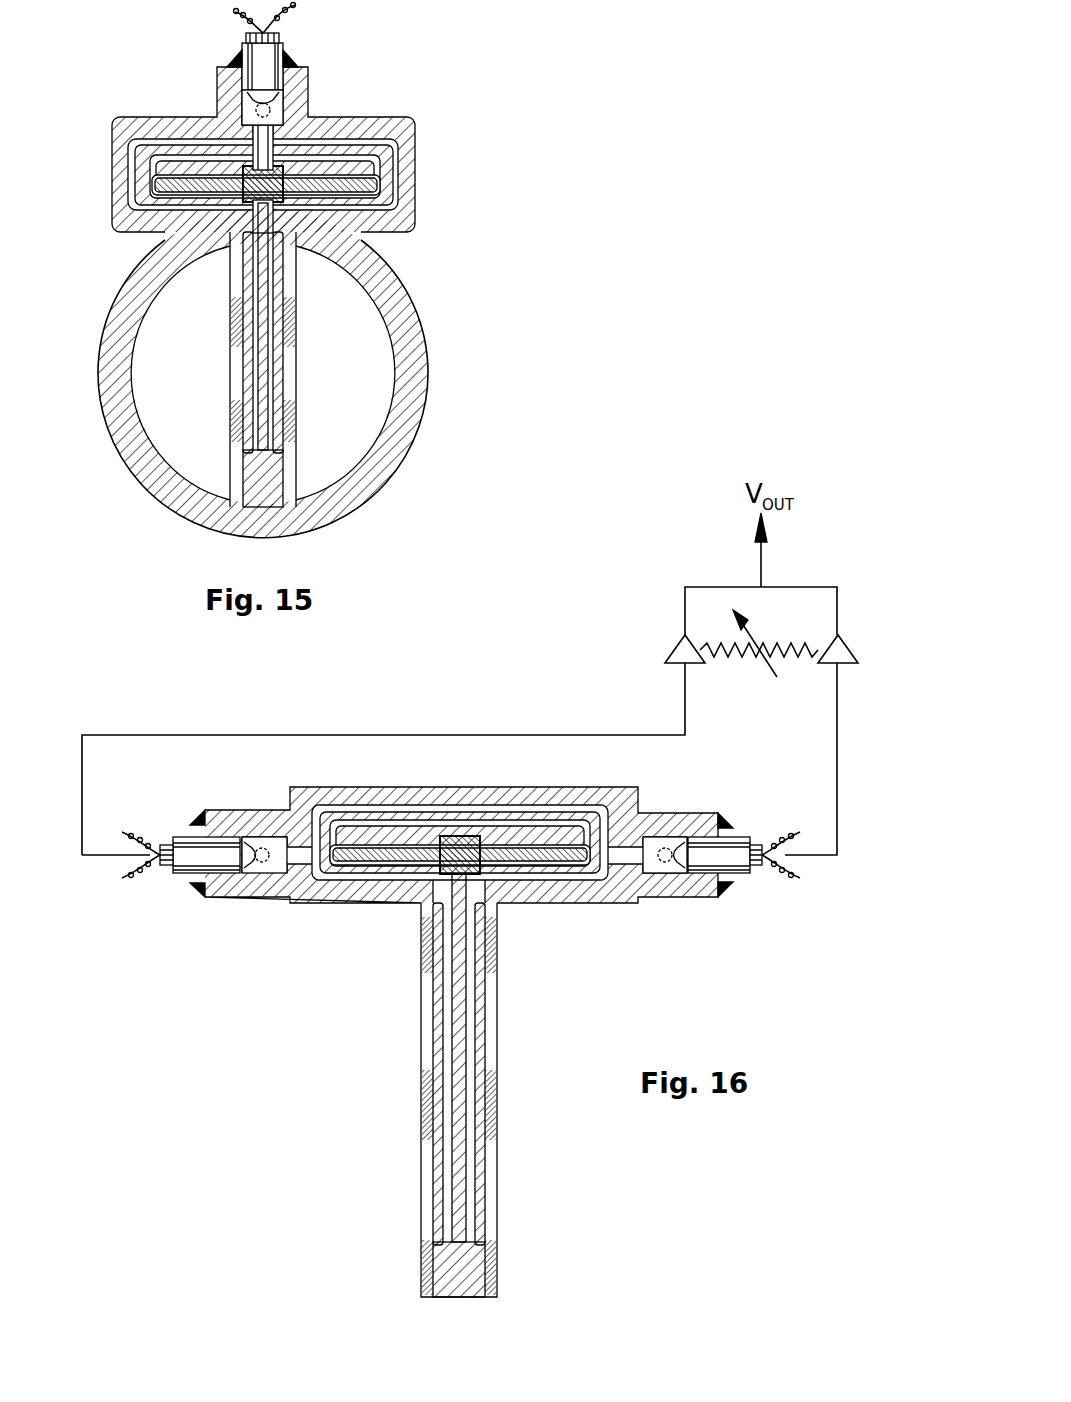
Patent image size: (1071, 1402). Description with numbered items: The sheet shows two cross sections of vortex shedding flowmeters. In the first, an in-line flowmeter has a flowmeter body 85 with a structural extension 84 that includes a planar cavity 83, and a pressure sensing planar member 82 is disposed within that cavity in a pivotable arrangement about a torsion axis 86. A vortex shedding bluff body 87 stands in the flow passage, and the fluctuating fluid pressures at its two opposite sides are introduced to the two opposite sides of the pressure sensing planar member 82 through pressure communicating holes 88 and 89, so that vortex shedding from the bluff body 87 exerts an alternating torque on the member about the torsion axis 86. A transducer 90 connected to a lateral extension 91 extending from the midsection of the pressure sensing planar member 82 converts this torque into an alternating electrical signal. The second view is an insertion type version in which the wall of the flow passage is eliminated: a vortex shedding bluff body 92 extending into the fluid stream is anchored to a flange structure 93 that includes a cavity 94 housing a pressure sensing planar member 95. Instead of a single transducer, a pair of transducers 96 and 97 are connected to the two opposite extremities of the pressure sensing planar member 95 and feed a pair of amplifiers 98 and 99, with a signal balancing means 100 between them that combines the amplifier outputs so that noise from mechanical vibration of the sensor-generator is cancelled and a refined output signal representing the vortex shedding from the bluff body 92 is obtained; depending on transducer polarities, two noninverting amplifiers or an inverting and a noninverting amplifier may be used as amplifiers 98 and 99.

In FIG. 15, the pressure sensing planar member 82 is at (373, 138).
In FIG. 15, the planar cavity 83 is at (152, 147).
In FIG. 15, the structural extension 84 is at (110, 180).
In FIG. 15, the flowmeter body 85 is at (97, 344).
In FIG. 15, the torsion axis 86 is at (297, 238).
In FIG. 15, the vortex shedding bluff body 87 is at (290, 365).
In FIG. 15, the pressure communicating hole 88 is at (233, 400).
In FIG. 15, the pressure communicating hole 89 is at (295, 400).
In FIG. 15, the transducer 90 is at (262, 75).
In FIG. 15, the lateral extension 91 is at (282, 108).
In FIG. 16, the vortex shedding bluff body 92 is at (430, 1060).
In FIG. 16, the flange structure 93 is at (267, 898).
In FIG. 16, the cavity 94 is at (375, 873).
In FIG. 16, the pressure sensing planar member 95 is at (553, 860).
In FIG. 16, the transducer 96 is at (220, 897).
In FIG. 16, the transducer 97 is at (707, 853).
In FIG. 16, the amplifier 98 is at (676, 645).
In FIG. 16, the amplifier 99 is at (858, 652).
In FIG. 16, the signal balancing means 100 is at (730, 637).